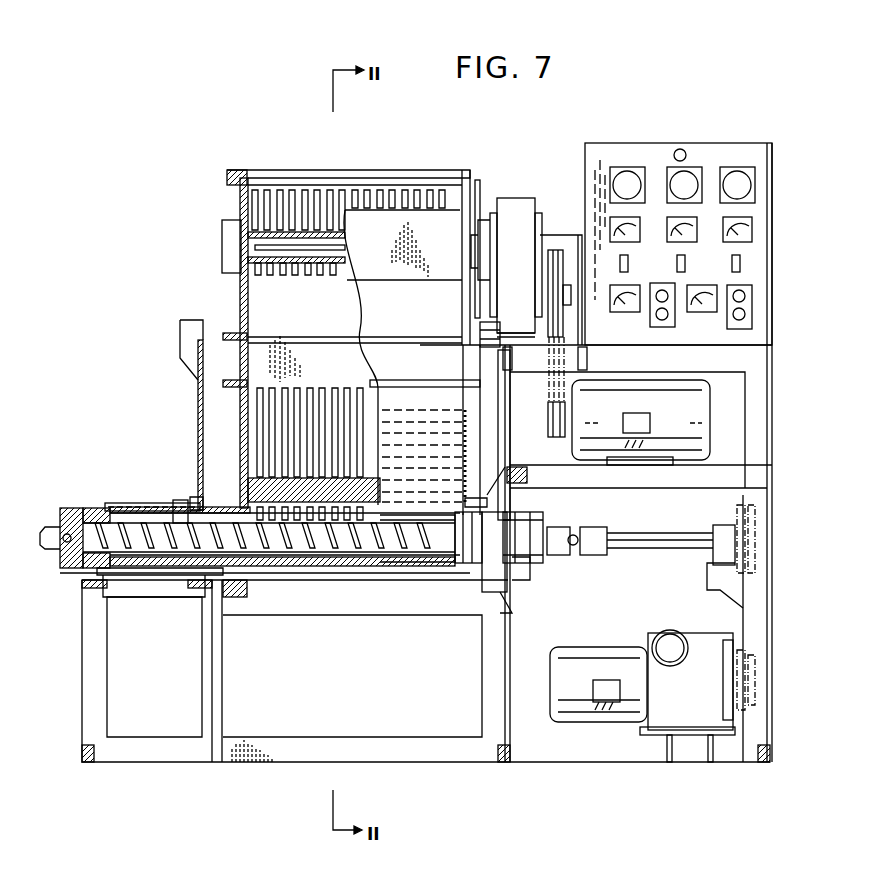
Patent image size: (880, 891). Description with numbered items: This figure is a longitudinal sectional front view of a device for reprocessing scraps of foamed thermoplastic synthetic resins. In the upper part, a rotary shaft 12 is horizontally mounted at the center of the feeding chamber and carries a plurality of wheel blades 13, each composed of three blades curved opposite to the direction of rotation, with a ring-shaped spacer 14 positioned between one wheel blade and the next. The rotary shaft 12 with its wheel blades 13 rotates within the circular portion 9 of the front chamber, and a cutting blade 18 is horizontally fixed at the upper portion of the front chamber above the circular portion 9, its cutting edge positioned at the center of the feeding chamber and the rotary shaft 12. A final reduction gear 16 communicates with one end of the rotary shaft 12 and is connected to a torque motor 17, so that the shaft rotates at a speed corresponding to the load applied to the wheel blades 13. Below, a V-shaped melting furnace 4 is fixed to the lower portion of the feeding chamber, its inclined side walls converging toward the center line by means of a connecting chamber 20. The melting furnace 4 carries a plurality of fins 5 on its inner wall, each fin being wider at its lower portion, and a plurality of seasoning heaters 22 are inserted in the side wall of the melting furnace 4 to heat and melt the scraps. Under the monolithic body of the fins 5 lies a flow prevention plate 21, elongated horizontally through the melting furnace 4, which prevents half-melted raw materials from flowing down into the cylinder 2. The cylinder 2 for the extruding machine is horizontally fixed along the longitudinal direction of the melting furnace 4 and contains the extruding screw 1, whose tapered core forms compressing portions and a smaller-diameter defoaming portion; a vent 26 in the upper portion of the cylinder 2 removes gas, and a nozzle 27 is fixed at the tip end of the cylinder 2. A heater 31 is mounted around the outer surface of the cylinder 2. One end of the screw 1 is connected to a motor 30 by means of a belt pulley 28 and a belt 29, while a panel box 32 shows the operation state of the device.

The screw 1 is at (268, 293).
The cylinder 2 is at (404, 180).
The melting furnace 4 is at (253, 437).
The fins 5 is at (238, 406).
The circular portion 9 is at (300, 228).
The rotary shaft 12 is at (248, 246).
The wheel blades 13 is at (327, 190).
The spacer 14 is at (292, 188).
The final reduction gear 16 is at (515, 222).
The torque motor 17 is at (700, 413).
The cutting blade 18 is at (361, 192).
The connecting chamber 20 is at (262, 357).
The flow prevention plate 21 is at (317, 545).
The seasoning heaters 22 is at (427, 410).
The vent 26 is at (180, 510).
The nozzle 27 is at (60, 520).
The belt pulley 28 is at (755, 513).
The belt 29 is at (753, 598).
The motor 30 is at (688, 720).
The heater 31 is at (134, 568).
The panel box 32 is at (770, 277).